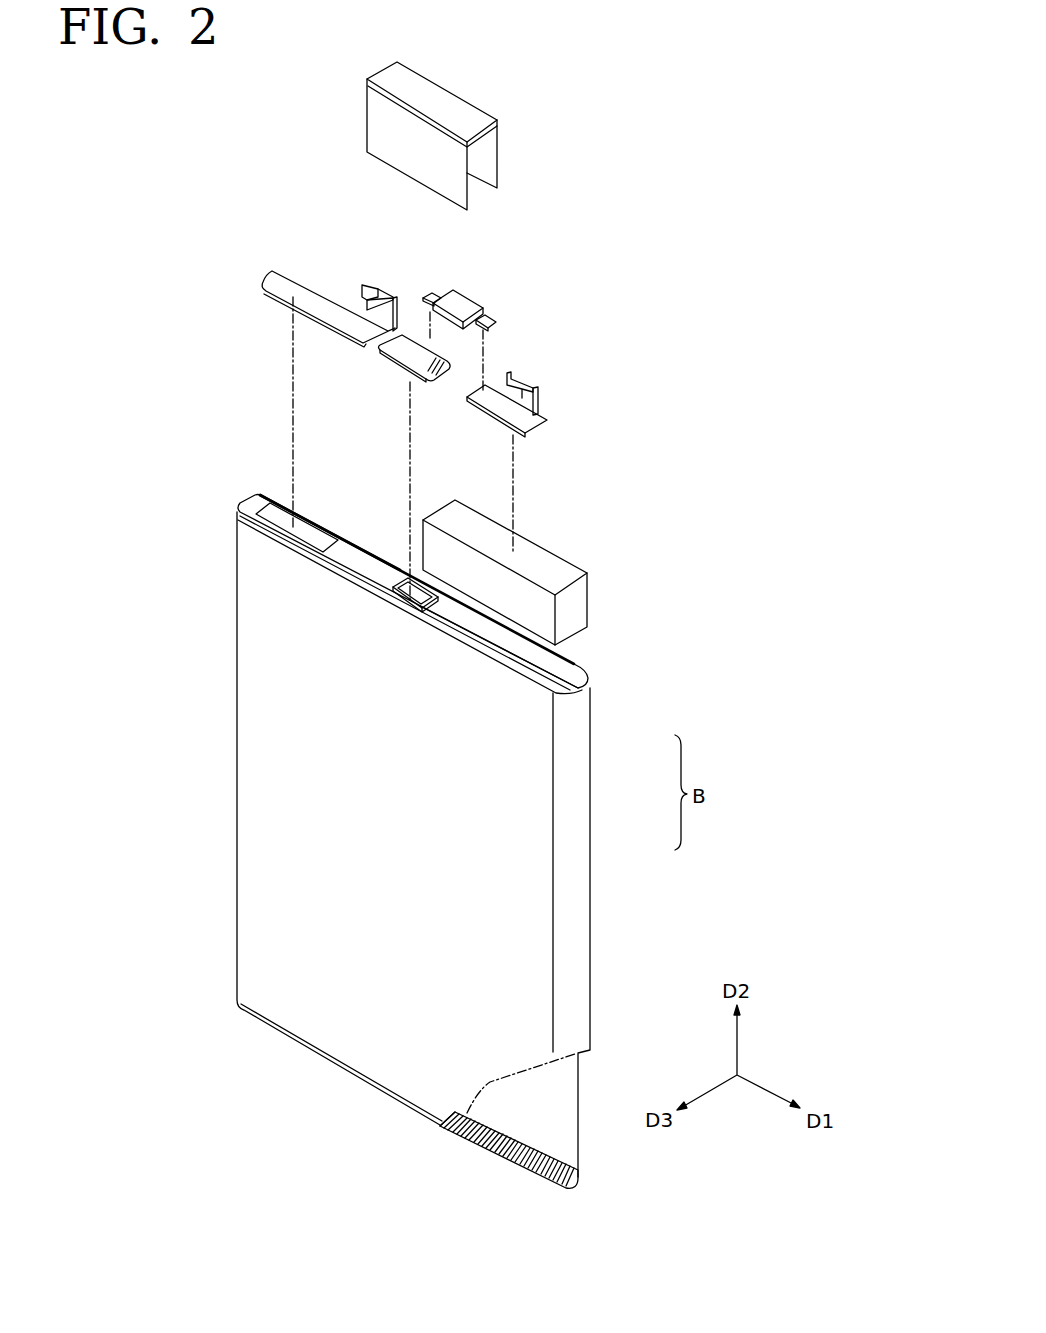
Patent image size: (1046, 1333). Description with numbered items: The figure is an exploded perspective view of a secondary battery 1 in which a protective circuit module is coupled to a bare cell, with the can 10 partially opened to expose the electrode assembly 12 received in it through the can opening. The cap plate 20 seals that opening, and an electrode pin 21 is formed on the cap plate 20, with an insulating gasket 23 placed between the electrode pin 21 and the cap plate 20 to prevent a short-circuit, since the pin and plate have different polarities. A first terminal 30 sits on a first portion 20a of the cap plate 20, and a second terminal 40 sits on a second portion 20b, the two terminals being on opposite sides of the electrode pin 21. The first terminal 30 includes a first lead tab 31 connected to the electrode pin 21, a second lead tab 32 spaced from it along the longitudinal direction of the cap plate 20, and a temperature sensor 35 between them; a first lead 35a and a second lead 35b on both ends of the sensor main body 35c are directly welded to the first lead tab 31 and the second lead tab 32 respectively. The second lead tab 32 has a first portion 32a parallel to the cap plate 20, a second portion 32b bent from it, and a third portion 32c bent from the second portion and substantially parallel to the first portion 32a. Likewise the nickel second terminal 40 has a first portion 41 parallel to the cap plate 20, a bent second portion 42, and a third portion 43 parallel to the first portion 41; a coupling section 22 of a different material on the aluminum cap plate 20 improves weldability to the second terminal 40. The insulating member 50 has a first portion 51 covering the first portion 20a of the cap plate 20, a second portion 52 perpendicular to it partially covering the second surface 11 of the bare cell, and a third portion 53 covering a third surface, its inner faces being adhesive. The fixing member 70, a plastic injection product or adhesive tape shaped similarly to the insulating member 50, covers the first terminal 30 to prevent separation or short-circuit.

The secondary battery 1 is at (350, 1102).
The can 10 is at (578, 802).
The second surface 11 is at (245, 775).
The electrode assembly 12 is at (495, 1150).
The cap plate 20 is at (582, 692).
The first portion of the cap plate 20a is at (487, 655).
The second portion of the cap plate 20b is at (350, 565).
The electrode pin 21 is at (413, 602).
The coupling section 22 is at (270, 510).
The insulating gasket 23 is at (395, 600).
The first terminal 30 is at (420, 482).
The first lead tab 31 is at (394, 372).
The second lead tab 32 is at (470, 417).
The first portion of the second lead tab 32a is at (530, 436).
The second portion of the second lead tab 32b is at (540, 406).
The third portion of the second lead tab 32c is at (520, 378).
The temperature sensor 35 is at (557, 265).
The first lead 35a is at (437, 293).
The second lead 35b is at (496, 320).
The main body 35c is at (463, 300).
The second terminal 40 is at (268, 264).
The first portion of the second terminal 41 is at (317, 292).
The second portion of the second terminal 42 is at (378, 313).
The third portion of the second terminal 43 is at (367, 285).
The insulating member 50 is at (606, 570).
The first portion of the insulating member 51 is at (566, 580).
The second portion of the insulating member 52 is at (553, 630).
The third portion of the insulating member 53 is at (583, 603).
The fixing member 70 is at (452, 100).